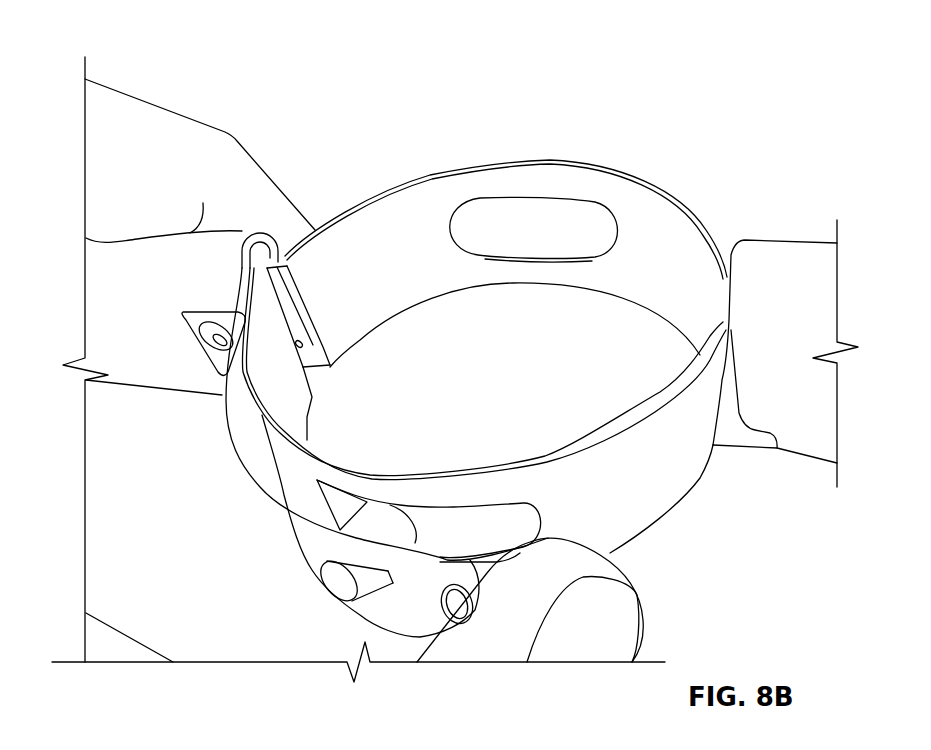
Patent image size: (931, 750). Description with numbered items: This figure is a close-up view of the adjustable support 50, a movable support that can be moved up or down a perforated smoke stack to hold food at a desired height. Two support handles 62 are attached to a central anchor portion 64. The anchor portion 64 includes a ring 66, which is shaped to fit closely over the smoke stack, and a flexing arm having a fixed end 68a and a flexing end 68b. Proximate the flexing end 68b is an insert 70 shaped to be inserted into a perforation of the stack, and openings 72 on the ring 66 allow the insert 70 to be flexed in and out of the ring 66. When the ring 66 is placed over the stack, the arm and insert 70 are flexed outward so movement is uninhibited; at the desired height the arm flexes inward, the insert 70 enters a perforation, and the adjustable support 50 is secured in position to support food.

The adjustable support 50 is at (140, 43).
The support handles 62 is at (145, 358).
The central anchor portion 64 is at (652, 150).
The ring 66 is at (387, 233).
The fixed end 68a is at (193, 327).
The flexing end 68b is at (390, 610).
The insert 70 is at (335, 580).
The openings 72 is at (503, 222).